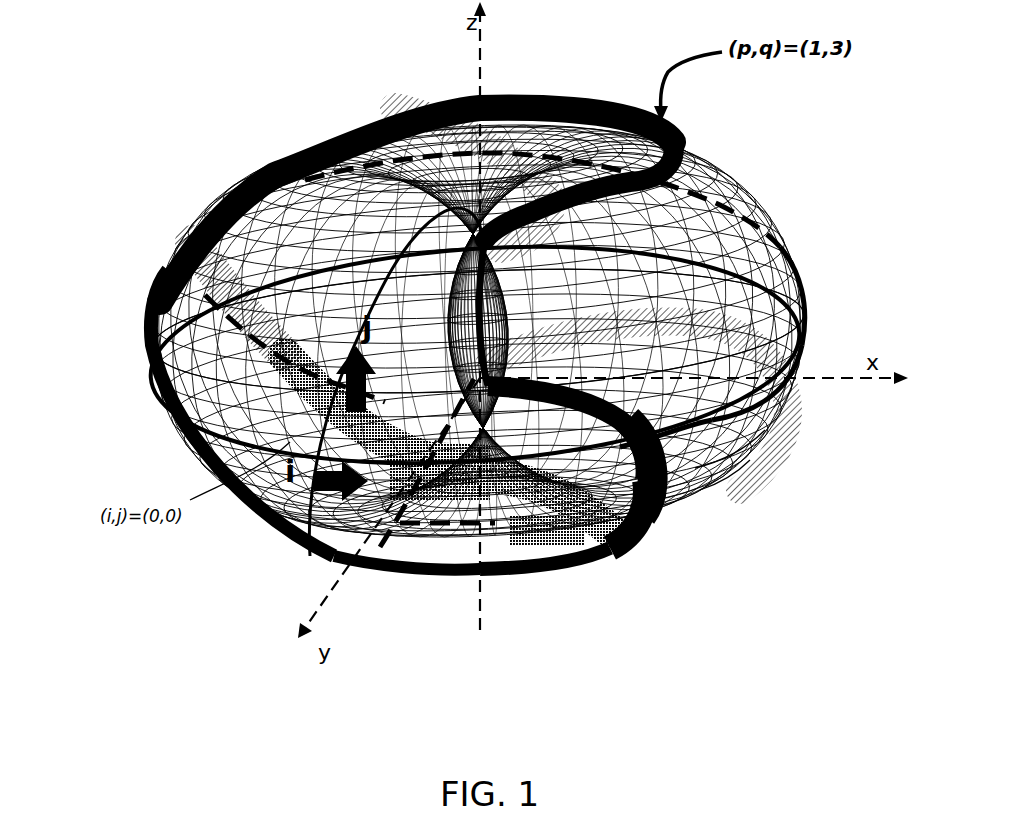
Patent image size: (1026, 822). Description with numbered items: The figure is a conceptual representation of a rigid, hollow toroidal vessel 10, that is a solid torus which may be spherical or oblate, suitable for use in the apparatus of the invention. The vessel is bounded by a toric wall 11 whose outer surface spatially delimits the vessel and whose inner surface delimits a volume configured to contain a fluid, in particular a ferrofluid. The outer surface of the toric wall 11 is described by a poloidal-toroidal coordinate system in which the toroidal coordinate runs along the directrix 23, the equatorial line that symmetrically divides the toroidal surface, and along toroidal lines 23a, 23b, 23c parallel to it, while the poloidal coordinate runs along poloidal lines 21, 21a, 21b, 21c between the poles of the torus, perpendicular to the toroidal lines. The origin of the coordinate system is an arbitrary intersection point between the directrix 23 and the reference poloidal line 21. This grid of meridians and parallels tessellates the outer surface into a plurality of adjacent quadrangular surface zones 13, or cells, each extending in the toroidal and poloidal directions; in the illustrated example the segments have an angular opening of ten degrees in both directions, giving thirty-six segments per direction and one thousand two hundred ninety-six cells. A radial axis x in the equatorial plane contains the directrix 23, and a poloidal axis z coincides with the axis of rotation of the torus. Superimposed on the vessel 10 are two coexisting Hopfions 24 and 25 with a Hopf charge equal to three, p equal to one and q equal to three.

The toroidal vessel 10 is at (196, 98).
The toric wall 11 is at (292, 130).
The surface zone 13 is at (235, 182).
The poloidal line 21 is at (300, 540).
The poloidal line 21a is at (445, 558).
The poloidal line 21b is at (545, 560).
The poloidal line 21c is at (620, 540).
The directrix 23 is at (162, 387).
The toroidal line 23a is at (742, 436).
The toroidal line 23b is at (735, 462).
The toroidal line 23c is at (722, 490).
The Hopfion 24 is at (382, 115).
The Hopfion 25 is at (688, 140).